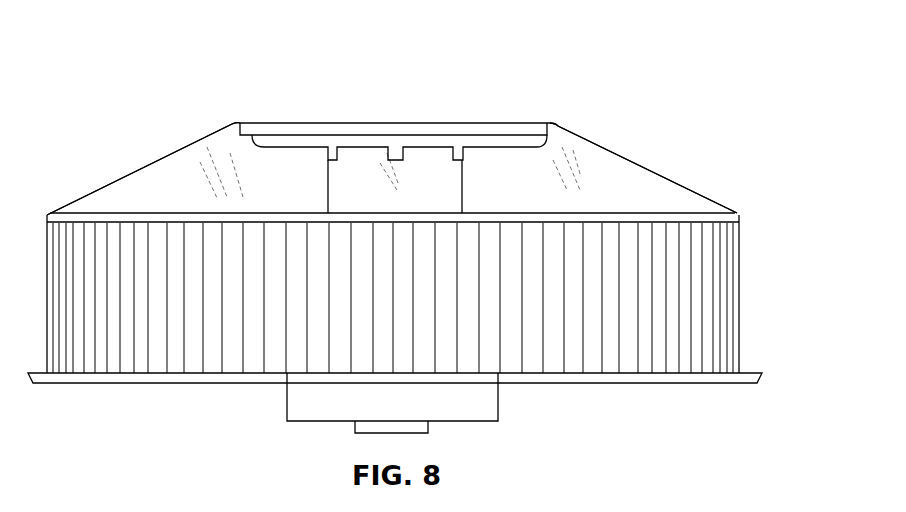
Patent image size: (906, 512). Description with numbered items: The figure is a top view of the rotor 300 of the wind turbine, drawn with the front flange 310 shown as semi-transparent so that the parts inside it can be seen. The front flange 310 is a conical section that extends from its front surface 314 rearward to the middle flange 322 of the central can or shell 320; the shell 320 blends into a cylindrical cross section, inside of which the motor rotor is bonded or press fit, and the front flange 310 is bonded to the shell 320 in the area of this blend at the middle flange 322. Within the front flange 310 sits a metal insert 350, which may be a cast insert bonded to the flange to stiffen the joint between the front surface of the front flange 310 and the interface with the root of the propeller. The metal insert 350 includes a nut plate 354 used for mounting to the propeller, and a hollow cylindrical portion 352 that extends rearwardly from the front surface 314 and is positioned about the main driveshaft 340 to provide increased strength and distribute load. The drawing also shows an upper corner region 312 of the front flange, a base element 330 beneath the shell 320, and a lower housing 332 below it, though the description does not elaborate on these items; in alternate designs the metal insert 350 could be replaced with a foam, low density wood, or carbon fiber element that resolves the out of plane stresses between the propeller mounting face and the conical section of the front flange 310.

The rotor 300 is at (644, 80).
The front flange 310 is at (120, 193).
The right top corner of upper housing 312 is at (556, 128).
The front surface 314 is at (257, 123).
The can or shell 320 is at (727, 304).
The middle flange 322 is at (740, 219).
The base plate 330 is at (189, 383).
The lower connector housing 332 is at (500, 400).
The main driveshaft 340 is at (430, 430).
The metal insert 350 is at (290, 113).
The hollow cylindrical portion 352 is at (437, 183).
The nut plate 354 is at (296, 147).